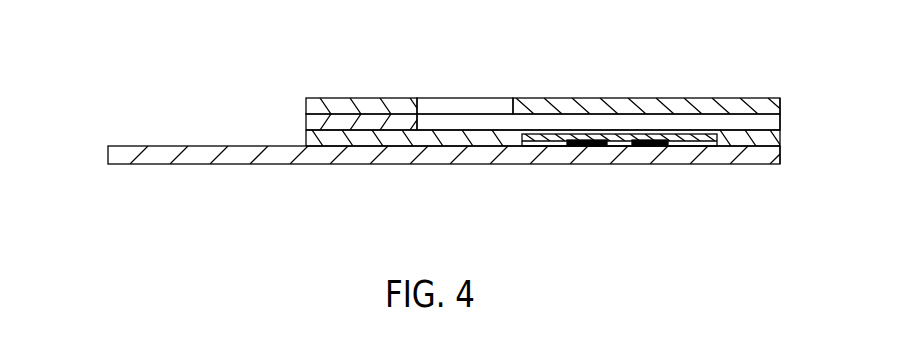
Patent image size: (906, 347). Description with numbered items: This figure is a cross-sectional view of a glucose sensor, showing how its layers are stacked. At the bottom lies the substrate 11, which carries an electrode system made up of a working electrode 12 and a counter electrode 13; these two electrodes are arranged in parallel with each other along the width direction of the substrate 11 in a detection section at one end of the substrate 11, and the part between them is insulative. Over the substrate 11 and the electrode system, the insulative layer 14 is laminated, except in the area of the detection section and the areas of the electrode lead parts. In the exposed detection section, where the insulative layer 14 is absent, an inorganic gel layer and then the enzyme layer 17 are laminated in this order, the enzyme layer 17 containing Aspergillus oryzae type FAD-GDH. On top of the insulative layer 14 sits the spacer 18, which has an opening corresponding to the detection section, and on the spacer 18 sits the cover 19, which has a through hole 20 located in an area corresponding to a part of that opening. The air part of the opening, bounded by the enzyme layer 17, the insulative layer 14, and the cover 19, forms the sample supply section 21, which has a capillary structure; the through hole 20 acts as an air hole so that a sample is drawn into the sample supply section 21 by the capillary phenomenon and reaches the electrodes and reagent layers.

The substrate 11 is at (127, 155).
The working electrode 12 is at (595, 144).
The counter electrode 13 is at (655, 144).
The insulative layer 14 is at (310, 138).
The enzyme layer 17 is at (540, 144).
The spacer 18 is at (310, 122).
The cover 19 is at (362, 106).
The through hole 20 is at (465, 106).
The sample supply section 21 is at (750, 124).